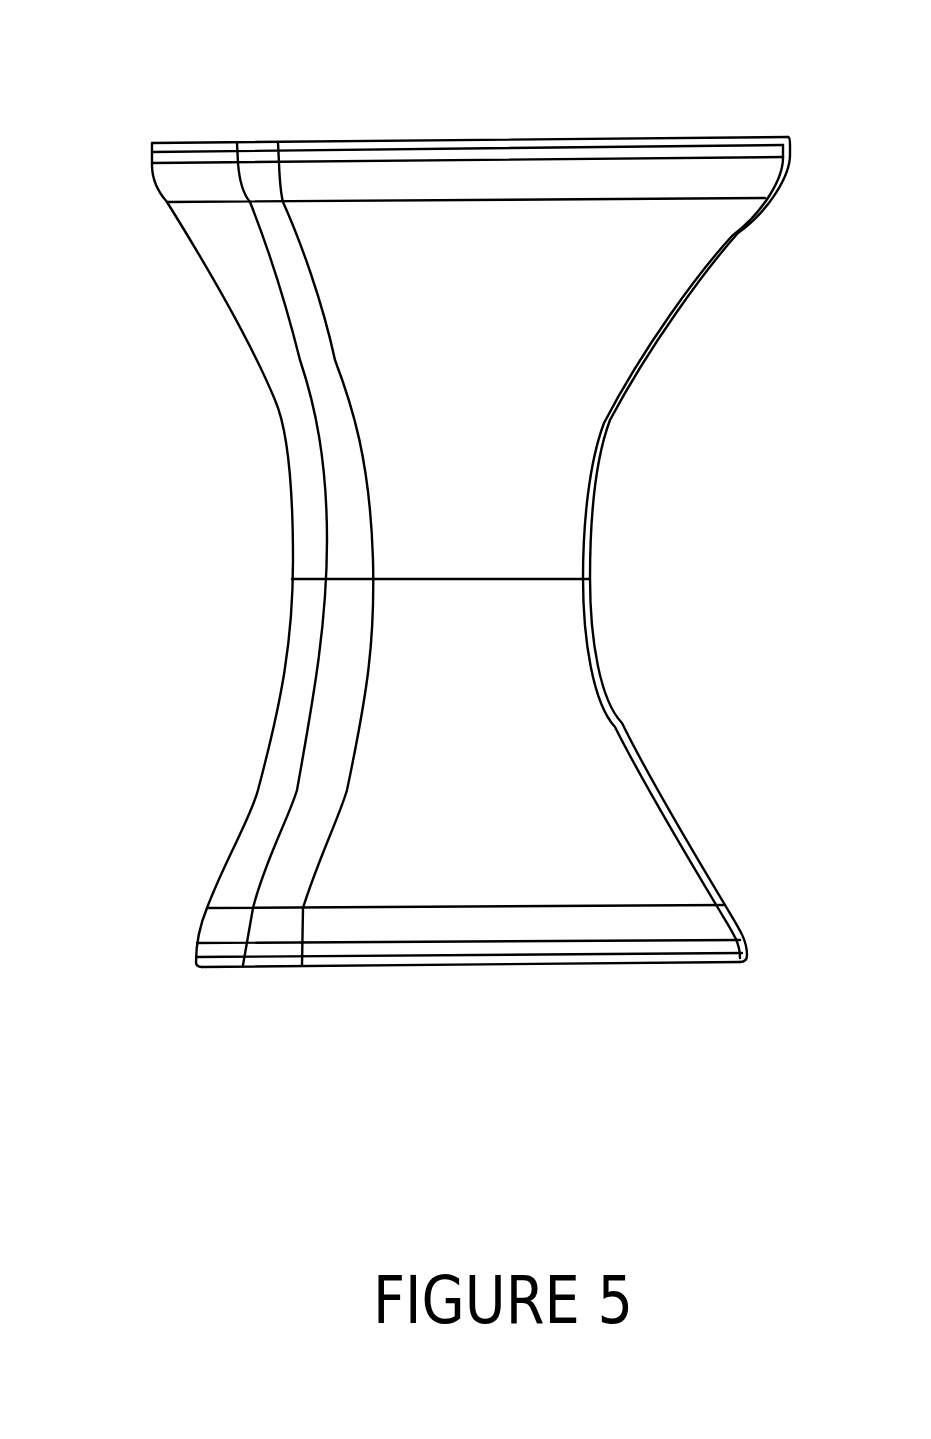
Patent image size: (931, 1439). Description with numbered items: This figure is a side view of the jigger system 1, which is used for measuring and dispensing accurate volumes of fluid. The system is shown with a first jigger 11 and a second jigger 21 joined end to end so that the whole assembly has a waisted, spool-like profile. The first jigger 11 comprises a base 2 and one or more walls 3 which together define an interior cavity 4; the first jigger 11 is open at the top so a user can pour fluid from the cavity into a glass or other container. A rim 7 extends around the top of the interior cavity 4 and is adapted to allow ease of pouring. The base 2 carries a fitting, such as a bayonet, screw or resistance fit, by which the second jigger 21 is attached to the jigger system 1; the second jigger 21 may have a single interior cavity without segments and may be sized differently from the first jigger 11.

The jigger system 1 is at (238, 425).
The base 2 is at (292, 583).
The walls 3 is at (273, 293).
The interior cavity 4 is at (642, 132).
The rim 7 is at (223, 152).
The first jigger 11 is at (677, 317).
The second jigger 21 is at (273, 817).